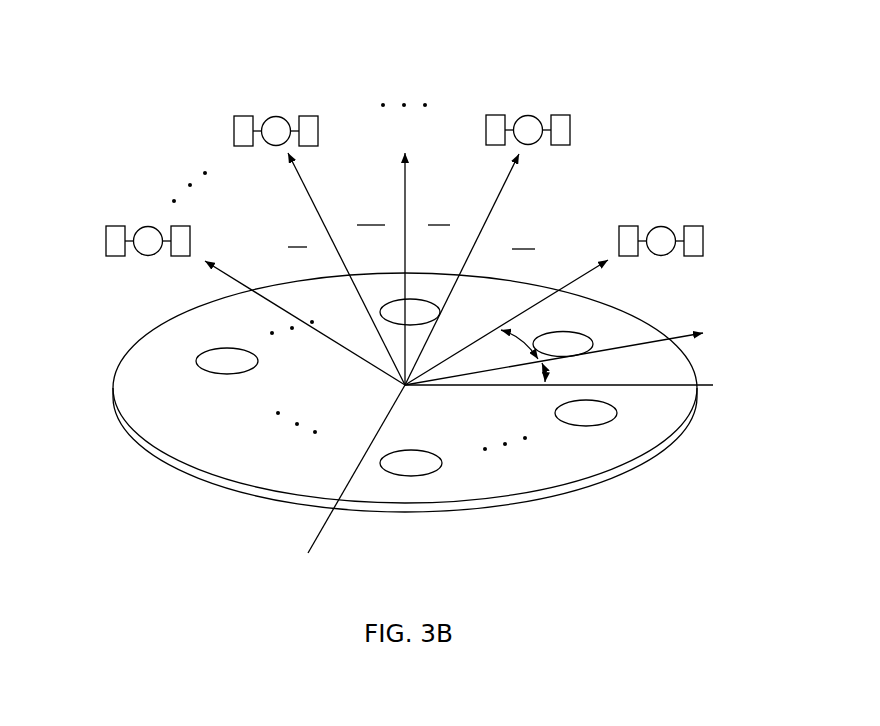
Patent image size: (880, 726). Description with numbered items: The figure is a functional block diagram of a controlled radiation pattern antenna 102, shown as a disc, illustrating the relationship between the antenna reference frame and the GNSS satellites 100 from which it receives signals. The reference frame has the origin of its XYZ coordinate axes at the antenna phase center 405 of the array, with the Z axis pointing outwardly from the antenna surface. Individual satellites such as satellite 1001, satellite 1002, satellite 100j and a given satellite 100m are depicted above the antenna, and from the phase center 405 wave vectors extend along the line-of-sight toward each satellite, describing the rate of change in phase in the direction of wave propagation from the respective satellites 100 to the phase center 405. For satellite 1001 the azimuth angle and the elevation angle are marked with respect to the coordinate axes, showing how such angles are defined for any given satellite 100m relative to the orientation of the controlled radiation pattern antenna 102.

The GNSS satellites 100 is at (406, 159).
The given satellite 100m is at (268, 126).
The GNSS satellite j 100j is at (142, 233).
The GNSS satellite 1002 is at (532, 120).
The GNSS satellite 1001 is at (667, 233).
The controlled radiation pattern antenna 102 is at (577, 483).
The antenna phase center 405 is at (404, 386).